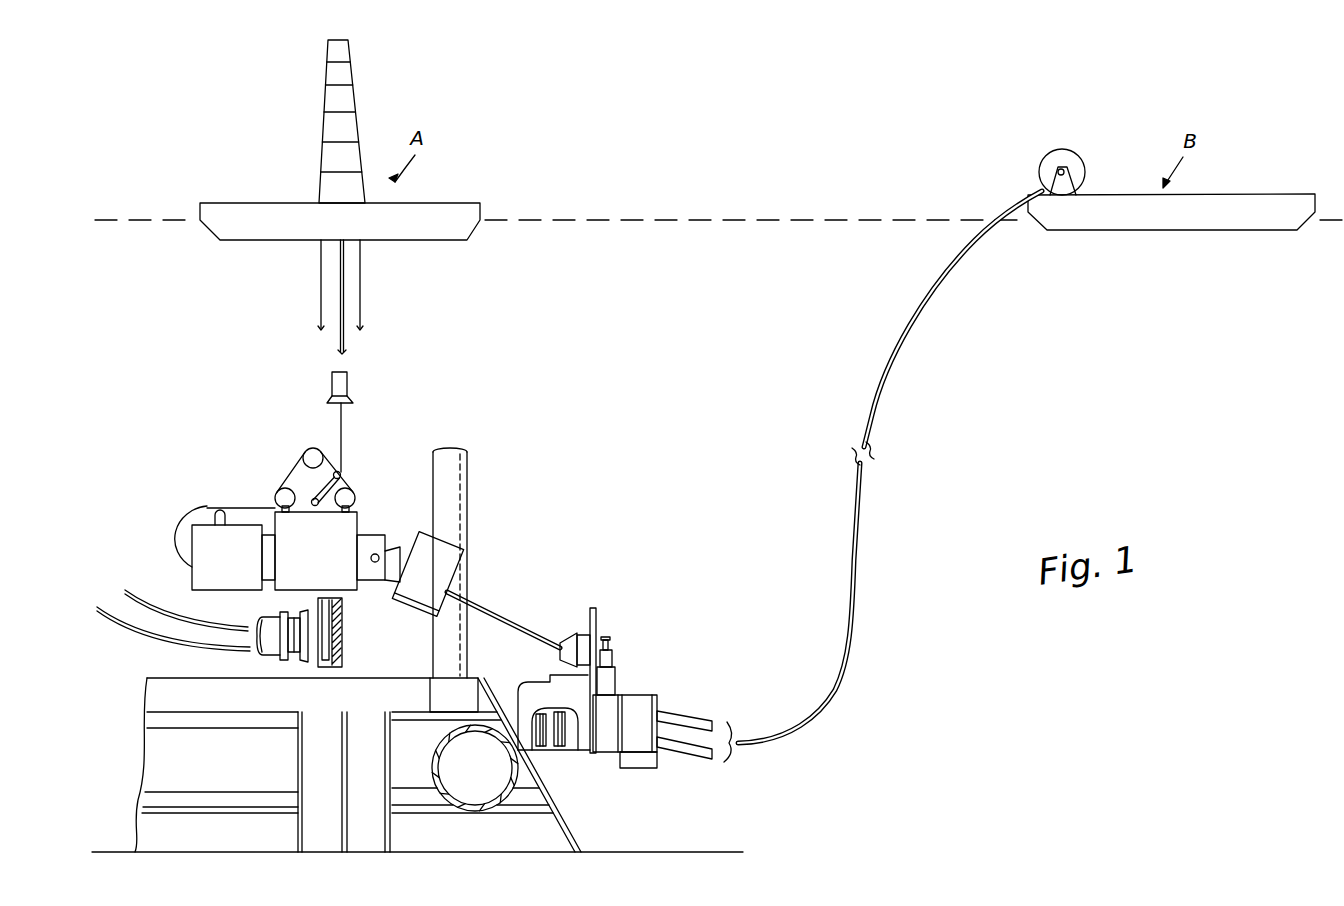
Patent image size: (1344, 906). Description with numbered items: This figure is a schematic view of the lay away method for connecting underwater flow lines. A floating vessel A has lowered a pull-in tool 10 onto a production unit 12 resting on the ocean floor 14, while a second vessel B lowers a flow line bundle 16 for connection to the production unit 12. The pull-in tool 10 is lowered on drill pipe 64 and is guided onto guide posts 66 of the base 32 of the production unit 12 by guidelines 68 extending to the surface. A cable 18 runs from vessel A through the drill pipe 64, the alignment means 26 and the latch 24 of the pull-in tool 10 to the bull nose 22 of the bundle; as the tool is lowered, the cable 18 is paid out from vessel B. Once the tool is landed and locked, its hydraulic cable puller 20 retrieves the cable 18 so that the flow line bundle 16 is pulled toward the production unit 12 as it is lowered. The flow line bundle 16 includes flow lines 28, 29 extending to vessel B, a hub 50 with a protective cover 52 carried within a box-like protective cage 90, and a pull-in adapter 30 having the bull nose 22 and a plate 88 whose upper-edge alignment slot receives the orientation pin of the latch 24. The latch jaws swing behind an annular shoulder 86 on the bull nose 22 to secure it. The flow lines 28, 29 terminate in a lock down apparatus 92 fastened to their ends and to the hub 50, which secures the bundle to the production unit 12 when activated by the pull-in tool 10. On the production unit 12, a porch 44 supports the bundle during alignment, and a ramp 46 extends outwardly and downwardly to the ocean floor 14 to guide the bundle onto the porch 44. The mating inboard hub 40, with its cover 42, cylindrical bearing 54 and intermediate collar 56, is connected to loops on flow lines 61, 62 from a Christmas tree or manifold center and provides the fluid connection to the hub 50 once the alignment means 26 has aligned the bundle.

The pull-in tool 10 is at (237, 428).
The production unit 12 is at (355, 833).
The ocean floor 14 is at (660, 850).
The flow line bundle 16 is at (675, 688).
The cable 18 is at (343, 436).
The hydraulic cable puller 20 is at (348, 378).
The bull nose 22 is at (562, 634).
The latch 24 is at (444, 552).
The alignment means 26 is at (380, 528).
The flow line 28 is at (713, 721).
The flow line 29 is at (694, 764).
The pull-in adapter 30 is at (619, 680).
The base 32 is at (490, 808).
The inboard hub 40 is at (296, 661).
The cover 42 is at (343, 630).
The porch 44 is at (440, 673).
The ramp 46 is at (579, 838).
The hub 50 is at (561, 750).
The protective cover 52 is at (544, 747).
The cylindrical bearing 54 is at (271, 615).
The intermediate collar 56 is at (280, 658).
The flow line 61 is at (129, 588).
The flow line 62 is at (98, 611).
The drill pipe 64 is at (344, 350).
The guide post 66 is at (469, 462).
The guidelines 68 is at (362, 308).
The annular shoulder 86 is at (583, 633).
The plate 88 is at (597, 620).
The protective cage 90 is at (525, 688).
The lock down apparatus 92 is at (614, 638).